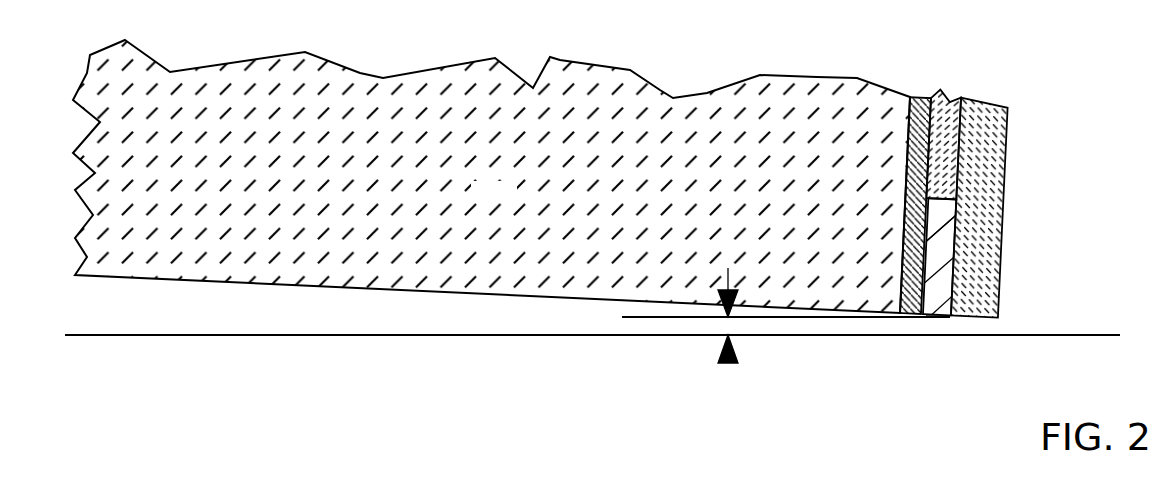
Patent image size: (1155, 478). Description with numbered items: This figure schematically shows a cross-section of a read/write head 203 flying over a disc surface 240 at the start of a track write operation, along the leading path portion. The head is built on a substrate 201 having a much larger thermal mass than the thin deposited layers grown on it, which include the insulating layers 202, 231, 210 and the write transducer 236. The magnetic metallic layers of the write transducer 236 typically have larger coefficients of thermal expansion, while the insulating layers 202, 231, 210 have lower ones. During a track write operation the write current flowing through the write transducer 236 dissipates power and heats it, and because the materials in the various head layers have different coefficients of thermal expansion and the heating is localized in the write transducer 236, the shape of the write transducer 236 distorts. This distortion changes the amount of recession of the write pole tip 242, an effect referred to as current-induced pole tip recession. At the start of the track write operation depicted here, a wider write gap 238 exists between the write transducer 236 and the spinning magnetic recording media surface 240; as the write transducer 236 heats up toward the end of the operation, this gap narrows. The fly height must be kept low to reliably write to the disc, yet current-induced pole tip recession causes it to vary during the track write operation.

The substrate 201 is at (513, 200).
The insulating layer 202 is at (921, 96).
The read/write head 203 is at (400, 38).
The insulating layer 210 is at (994, 100).
The insulating layer 231 is at (950, 98).
The write transducer 236 is at (958, 253).
The write gap 238 is at (728, 363).
The disc surface 240 is at (350, 312).
The write pole tip 242 is at (938, 317).